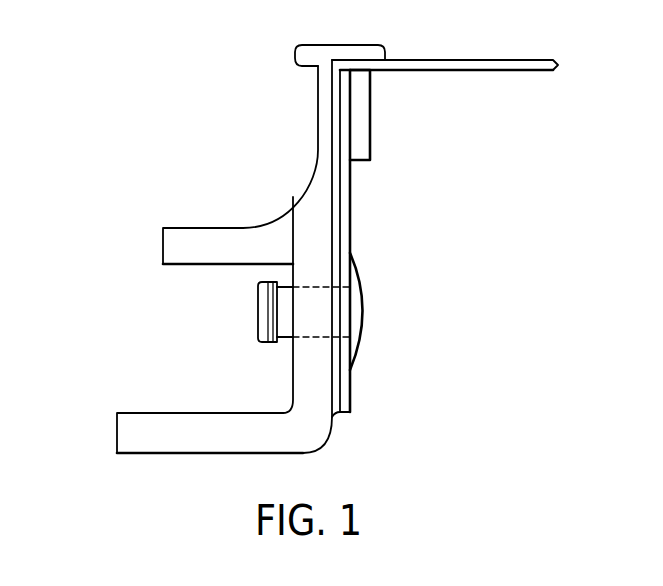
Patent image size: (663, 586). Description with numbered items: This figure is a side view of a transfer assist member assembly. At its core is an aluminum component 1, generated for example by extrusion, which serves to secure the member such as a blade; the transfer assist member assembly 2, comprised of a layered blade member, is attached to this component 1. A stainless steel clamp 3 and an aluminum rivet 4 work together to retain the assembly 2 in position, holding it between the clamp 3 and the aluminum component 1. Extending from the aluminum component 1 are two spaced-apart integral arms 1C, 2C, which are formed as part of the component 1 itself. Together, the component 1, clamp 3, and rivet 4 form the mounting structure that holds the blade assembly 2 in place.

The aluminum component 1 is at (312, 193).
The integral arm 1C is at (173, 247).
The transfer assist member assembly 2 is at (452, 62).
The integral arm 2C is at (122, 435).
The stainless steel clamp 3 is at (358, 127).
The aluminum rivet 4 is at (357, 325).